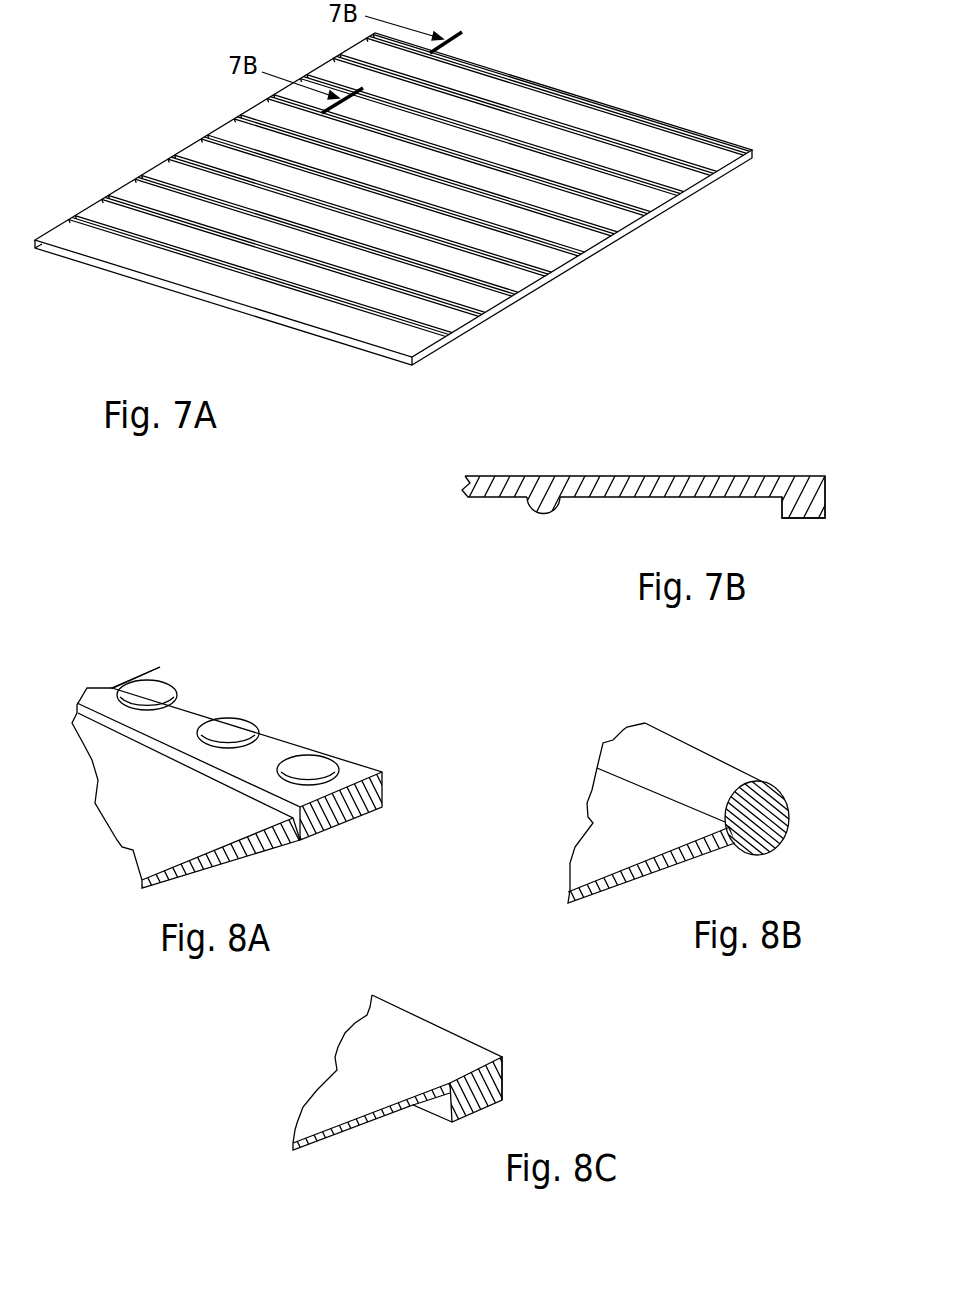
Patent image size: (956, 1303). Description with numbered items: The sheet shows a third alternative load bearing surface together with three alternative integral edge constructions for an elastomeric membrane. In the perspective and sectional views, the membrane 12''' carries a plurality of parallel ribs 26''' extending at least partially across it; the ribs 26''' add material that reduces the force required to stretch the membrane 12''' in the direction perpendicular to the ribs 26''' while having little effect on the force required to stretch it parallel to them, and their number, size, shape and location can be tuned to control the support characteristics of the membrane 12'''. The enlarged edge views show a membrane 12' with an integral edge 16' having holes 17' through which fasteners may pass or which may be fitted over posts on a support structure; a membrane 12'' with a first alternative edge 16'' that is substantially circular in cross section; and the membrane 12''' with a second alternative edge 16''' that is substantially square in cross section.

In FIG. 8A, the elastomeric membrane 12' is at (213, 710).
In FIG. 8B, the elastomeric membrane 12'' is at (664, 778).
In FIG. 7A, the membrane 12''' is at (405, 199).
In FIG. 7B, the membrane 12''' is at (656, 469).
In FIG. 8C, the membrane 12''' is at (378, 1012).
In FIG. 8A, the edge 16' is at (258, 732).
In FIG. 8B, the edge 16'' is at (753, 766).
In FIG. 7B, the edge 16''' is at (814, 465).
In FIG. 8C, the edge 16''' is at (505, 1089).
In FIG. 8A, the holes 17' is at (258, 711).
In FIG. 7A, the ribs 26''' is at (409, 185).
In FIG. 7B, the ribs 26''' is at (460, 527).